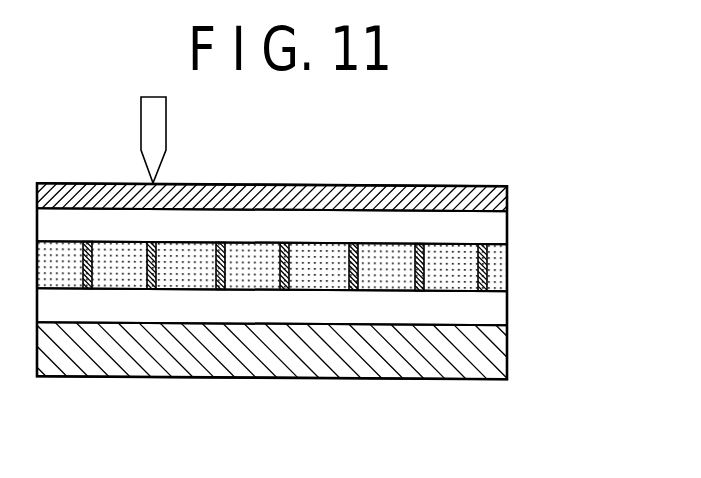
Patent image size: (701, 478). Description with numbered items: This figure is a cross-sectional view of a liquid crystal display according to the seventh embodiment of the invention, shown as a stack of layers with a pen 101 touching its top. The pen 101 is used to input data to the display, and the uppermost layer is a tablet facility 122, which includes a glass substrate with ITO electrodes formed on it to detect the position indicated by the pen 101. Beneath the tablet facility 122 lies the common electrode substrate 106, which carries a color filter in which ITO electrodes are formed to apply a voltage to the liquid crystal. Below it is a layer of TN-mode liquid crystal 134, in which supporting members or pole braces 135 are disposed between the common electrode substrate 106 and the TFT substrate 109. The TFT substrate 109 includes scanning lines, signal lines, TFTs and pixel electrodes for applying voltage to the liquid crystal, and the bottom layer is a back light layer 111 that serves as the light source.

The pen 101 is at (160, 135).
The tablet facility 122 is at (500, 198).
The common electrode substrate 106 is at (497, 232).
The TN-mode liquid crystal 134 is at (500, 268).
The pole braces 135 is at (89, 289).
The TFT substrate 109 is at (495, 303).
The back light layer 111 is at (495, 357).